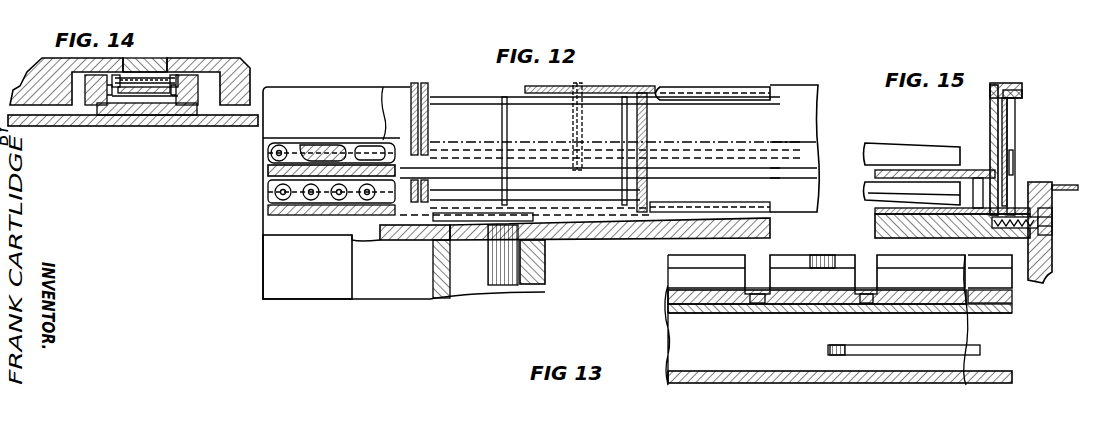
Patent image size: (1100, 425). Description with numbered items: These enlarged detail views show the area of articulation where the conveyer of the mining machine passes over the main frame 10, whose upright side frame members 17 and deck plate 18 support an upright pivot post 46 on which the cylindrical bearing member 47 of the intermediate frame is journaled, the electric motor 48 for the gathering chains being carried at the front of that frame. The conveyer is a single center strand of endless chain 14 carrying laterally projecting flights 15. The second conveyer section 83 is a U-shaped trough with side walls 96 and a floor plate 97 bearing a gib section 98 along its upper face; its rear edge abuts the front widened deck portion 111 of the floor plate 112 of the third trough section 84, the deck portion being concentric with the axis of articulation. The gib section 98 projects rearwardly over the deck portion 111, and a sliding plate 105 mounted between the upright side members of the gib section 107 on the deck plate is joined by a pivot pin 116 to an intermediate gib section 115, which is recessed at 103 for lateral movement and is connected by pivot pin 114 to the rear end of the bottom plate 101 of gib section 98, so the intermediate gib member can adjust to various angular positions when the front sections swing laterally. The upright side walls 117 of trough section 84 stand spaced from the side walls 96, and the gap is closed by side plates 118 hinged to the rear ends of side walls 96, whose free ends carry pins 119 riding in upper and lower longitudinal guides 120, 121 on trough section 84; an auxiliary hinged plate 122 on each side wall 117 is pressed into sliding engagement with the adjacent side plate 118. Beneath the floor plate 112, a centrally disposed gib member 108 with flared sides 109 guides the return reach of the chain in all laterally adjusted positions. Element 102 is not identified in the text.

In FIG. 12, the main frame 10 is at (593, 240).
In FIG. 14, the endless chain 14 is at (150, 58).
In FIG. 12, the endless chain 14 is at (311, 148).
In FIG. 14, the flights 15 is at (233, 58).
In FIG. 12, the flights 15 is at (312, 214).
In FIG. 15, the flights 15 is at (892, 142).
In FIG. 15, the upright side frame members 17 is at (1052, 244).
In FIG. 15, the deck plate 18 is at (935, 236).
In FIG. 12, the upright pivot post 46 is at (465, 272).
In FIG. 12, the cylindrical bearing member 47 is at (545, 284).
In FIG. 12, the electric motor 48 is at (326, 273).
In FIG. 12, the second conveyer section 83 is at (331, 81).
In FIG. 12, the third trough section 84 is at (779, 86).
In FIG. 15, the third trough section 84 is at (990, 106).
In FIG. 12, the side walls 96 is at (292, 100).
In FIG. 12, the floor plate 97 is at (388, 100).
In FIG. 13, the gib section 98 is at (733, 274).
In FIG. 13, the bottom plate 101 is at (703, 300).
In FIG. 13, the carriage top 102 is at (708, 265).
In FIG. 13, the recess 103 is at (788, 302).
In FIG. 14, the sliding plate 105 is at (128, 117).
In FIG. 13, the sliding plate 105 is at (927, 296).
In FIG. 14, the gib section 107 is at (85, 117).
In FIG. 13, the gib section 107 is at (893, 260).
In FIG. 13, the gib member 108 is at (984, 351).
In FIG. 13, the flared sides 109 is at (832, 348).
In FIG. 12, the widened deck portion 111 is at (267, 178).
In FIG. 14, the floor plate 112 is at (212, 127).
In FIG. 12, the floor plate 112 is at (346, 213).
In FIG. 13, the floor plate 112 is at (988, 307).
In FIG. 13, the pivot pin 114 is at (756, 303).
In FIG. 13, the intermediate gib section 115 is at (822, 256).
In FIG. 13, the pivot pin 116 is at (868, 306).
In FIG. 12, the upright side walls 117 is at (795, 103).
In FIG. 12, the side plates 118 is at (496, 97).
In FIG. 15, the side plates 118 is at (1003, 134).
In FIG. 12, the pins 119 is at (643, 128).
In FIG. 15, the pins 119 is at (1015, 163).
In FIG. 12, the upper guide 120 is at (701, 92).
In FIG. 15, the upper guide 120 is at (1017, 98).
In FIG. 12, the lower guide 121 is at (653, 208).
In FIG. 15, the lower guide 121 is at (1027, 200).
In FIG. 12, the auxiliary hinged plate 122 is at (548, 117).